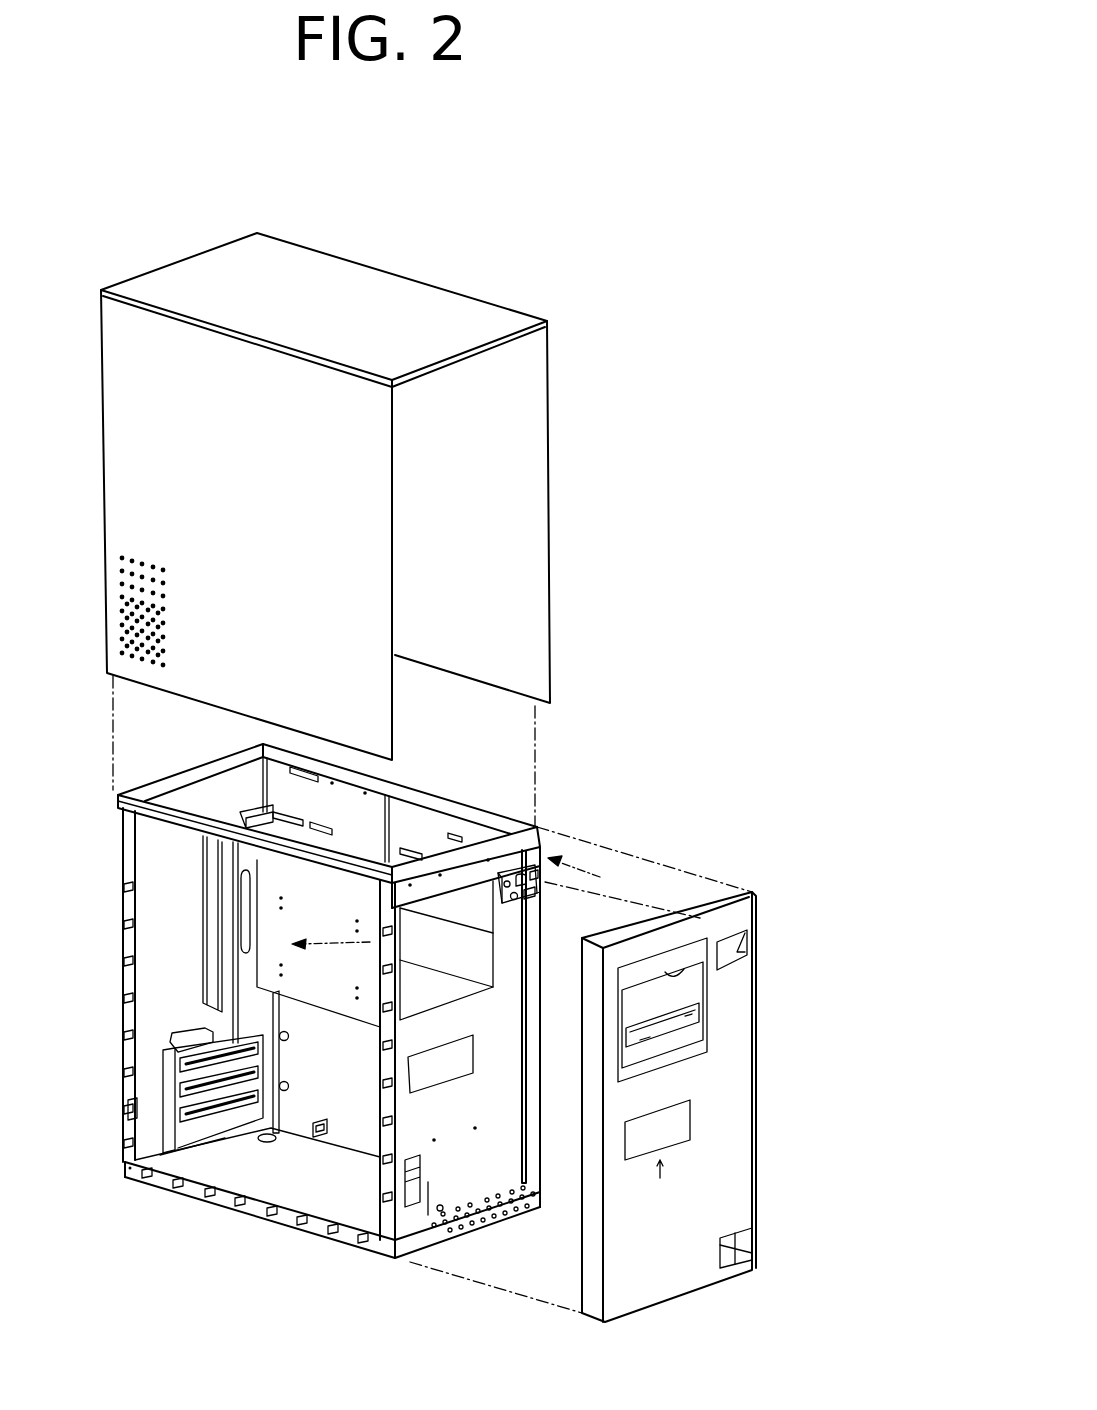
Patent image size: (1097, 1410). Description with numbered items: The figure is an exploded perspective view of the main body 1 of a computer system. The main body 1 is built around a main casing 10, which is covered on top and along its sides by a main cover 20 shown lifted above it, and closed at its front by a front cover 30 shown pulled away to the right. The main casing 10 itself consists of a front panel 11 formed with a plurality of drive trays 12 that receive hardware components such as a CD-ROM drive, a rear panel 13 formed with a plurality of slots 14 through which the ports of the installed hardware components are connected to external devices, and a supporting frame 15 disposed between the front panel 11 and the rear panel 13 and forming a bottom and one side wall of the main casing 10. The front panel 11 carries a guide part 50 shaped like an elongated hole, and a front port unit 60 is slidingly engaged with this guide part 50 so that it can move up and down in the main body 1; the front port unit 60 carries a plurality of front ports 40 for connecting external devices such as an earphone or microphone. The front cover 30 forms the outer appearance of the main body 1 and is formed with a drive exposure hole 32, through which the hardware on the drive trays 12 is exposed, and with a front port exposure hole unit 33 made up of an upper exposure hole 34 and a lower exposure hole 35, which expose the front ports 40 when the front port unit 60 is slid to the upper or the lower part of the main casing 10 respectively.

The main body 1 is at (631, 270).
The main casing 10 is at (324, 1053).
The front panel 11 is at (414, 1259).
The drive tray 12 is at (476, 887).
The rear panel 13 is at (182, 1170).
The slot 14 is at (165, 1079).
The supporting frame 15 is at (312, 1206).
The main cover 20 is at (550, 510).
The front cover 30 is at (719, 1068).
The drive exposure hole 32 is at (685, 977).
The front port exposure hole unit 33 is at (748, 1068).
The upper exposure hole 34 is at (750, 942).
The lower exposure hole 35 is at (788, 1243).
The front port 40 is at (539, 895).
The guide part 50 is at (543, 1157).
The front port unit 60 is at (535, 862).